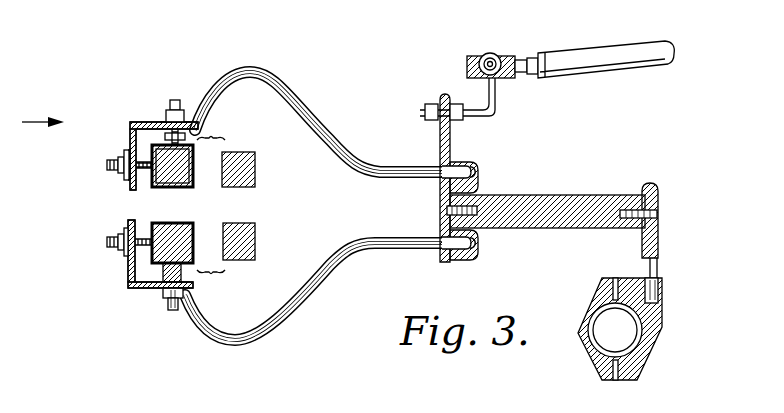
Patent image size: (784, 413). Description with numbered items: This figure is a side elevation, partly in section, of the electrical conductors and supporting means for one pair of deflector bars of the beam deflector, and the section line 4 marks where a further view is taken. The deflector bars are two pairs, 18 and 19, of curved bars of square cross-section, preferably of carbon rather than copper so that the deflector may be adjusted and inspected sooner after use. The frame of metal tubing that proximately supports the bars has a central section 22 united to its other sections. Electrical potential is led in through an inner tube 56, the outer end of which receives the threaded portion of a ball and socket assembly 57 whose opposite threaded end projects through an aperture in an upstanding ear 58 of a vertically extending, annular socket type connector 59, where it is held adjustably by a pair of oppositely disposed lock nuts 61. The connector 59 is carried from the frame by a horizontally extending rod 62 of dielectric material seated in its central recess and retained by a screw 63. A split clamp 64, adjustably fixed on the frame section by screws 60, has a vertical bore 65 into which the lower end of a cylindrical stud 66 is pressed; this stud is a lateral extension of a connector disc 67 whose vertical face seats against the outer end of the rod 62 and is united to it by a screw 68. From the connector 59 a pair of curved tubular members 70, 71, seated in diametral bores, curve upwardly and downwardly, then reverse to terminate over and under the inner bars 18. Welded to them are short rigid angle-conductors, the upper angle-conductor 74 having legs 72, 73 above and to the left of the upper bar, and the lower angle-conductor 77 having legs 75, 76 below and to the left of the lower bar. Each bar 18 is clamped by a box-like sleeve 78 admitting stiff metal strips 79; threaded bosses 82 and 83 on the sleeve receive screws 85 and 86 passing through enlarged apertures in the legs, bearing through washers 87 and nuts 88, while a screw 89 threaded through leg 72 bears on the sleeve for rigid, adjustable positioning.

The section line 4— 4 is at (36, 120).
The inner pair of deflector bars 18 is at (162, 187).
The outer pair of deflector bars 19 is at (249, 188).
The central section 22 is at (594, 330).
The inner tube 56 is at (596, 54).
The ball and socket assembly 57 is at (506, 89).
The upstanding ear 58 is at (440, 130).
The socket type connector 59 is at (479, 236).
The screws 60 is at (650, 284).
The lock nuts 61 is at (432, 104).
The horizontally extending rod 62 is at (553, 195).
The screw 63 is at (446, 210).
The split clamp 64 is at (655, 335).
The vertical bore 65 is at (659, 305).
The cylindrical stud 66 is at (657, 270).
The connector disc 67 is at (659, 195).
The screw 68 is at (658, 216).
The upper curved tubular member 70 is at (303, 113).
The lower curved tubular member 71 is at (320, 287).
The leg of upper angle-conductor 72 is at (168, 125).
The leg of upper angle-conductor 73 is at (129, 148).
The upper angle-conductor 74 is at (126, 116).
The leg of lower angle-conductor 75 is at (155, 290).
The leg of lower angle-conductor 76 is at (126, 270).
The lower angle-conductor 77 is at (122, 298).
The box-like sleeve 78 is at (195, 186).
The stiff strip 79 is at (194, 165).
The interiorly threaded boss 82 is at (190, 135).
The interiorly threaded boss 83 is at (150, 178).
The screw 85 is at (173, 100).
The screw 86 is at (108, 164).
The washers 87 is at (128, 178).
The nuts 88 is at (120, 172).
The screw 89 is at (118, 156).